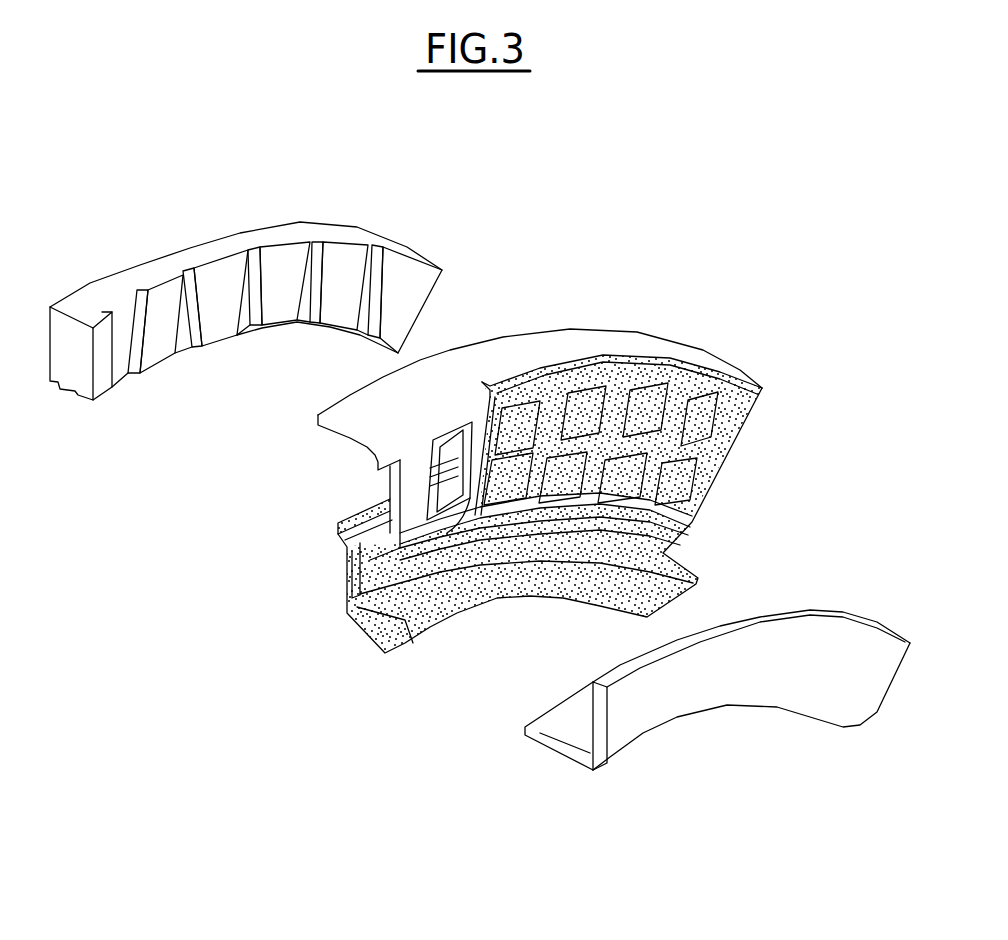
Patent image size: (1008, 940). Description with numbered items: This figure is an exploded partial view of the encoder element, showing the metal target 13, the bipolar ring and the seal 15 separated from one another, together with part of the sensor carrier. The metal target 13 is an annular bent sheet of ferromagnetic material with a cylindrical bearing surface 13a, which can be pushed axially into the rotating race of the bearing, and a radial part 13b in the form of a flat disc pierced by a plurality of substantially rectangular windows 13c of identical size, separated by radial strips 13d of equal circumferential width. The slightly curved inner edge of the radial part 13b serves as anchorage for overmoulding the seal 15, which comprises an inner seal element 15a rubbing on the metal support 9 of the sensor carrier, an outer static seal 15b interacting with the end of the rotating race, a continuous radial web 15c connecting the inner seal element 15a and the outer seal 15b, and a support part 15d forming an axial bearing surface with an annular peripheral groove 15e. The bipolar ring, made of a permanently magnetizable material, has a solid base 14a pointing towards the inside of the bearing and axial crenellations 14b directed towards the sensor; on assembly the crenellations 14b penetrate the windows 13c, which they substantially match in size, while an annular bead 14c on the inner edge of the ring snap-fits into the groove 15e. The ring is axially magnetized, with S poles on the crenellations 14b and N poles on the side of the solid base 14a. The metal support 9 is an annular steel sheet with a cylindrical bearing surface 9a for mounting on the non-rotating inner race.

The metal support 9 is at (660, 737).
The cylindrical bearing surface 9a is at (582, 723).
The metal target 13 is at (332, 440).
The cylindrical bearing surface 13a is at (353, 414).
The radial part 13b is at (388, 552).
The windows 13c is at (448, 447).
The radial strips 13d is at (417, 470).
The solid base 14a is at (104, 292).
The axial crenellations 14b is at (160, 352).
The annular bead 14c is at (65, 402).
The seal 15 is at (356, 628).
The inner seal element 15a is at (392, 645).
The outer static seal 15b is at (635, 368).
The continuous radial web 15c is at (700, 480).
The support part 15d is at (338, 532).
The annular peripheral groove 15e is at (360, 541).